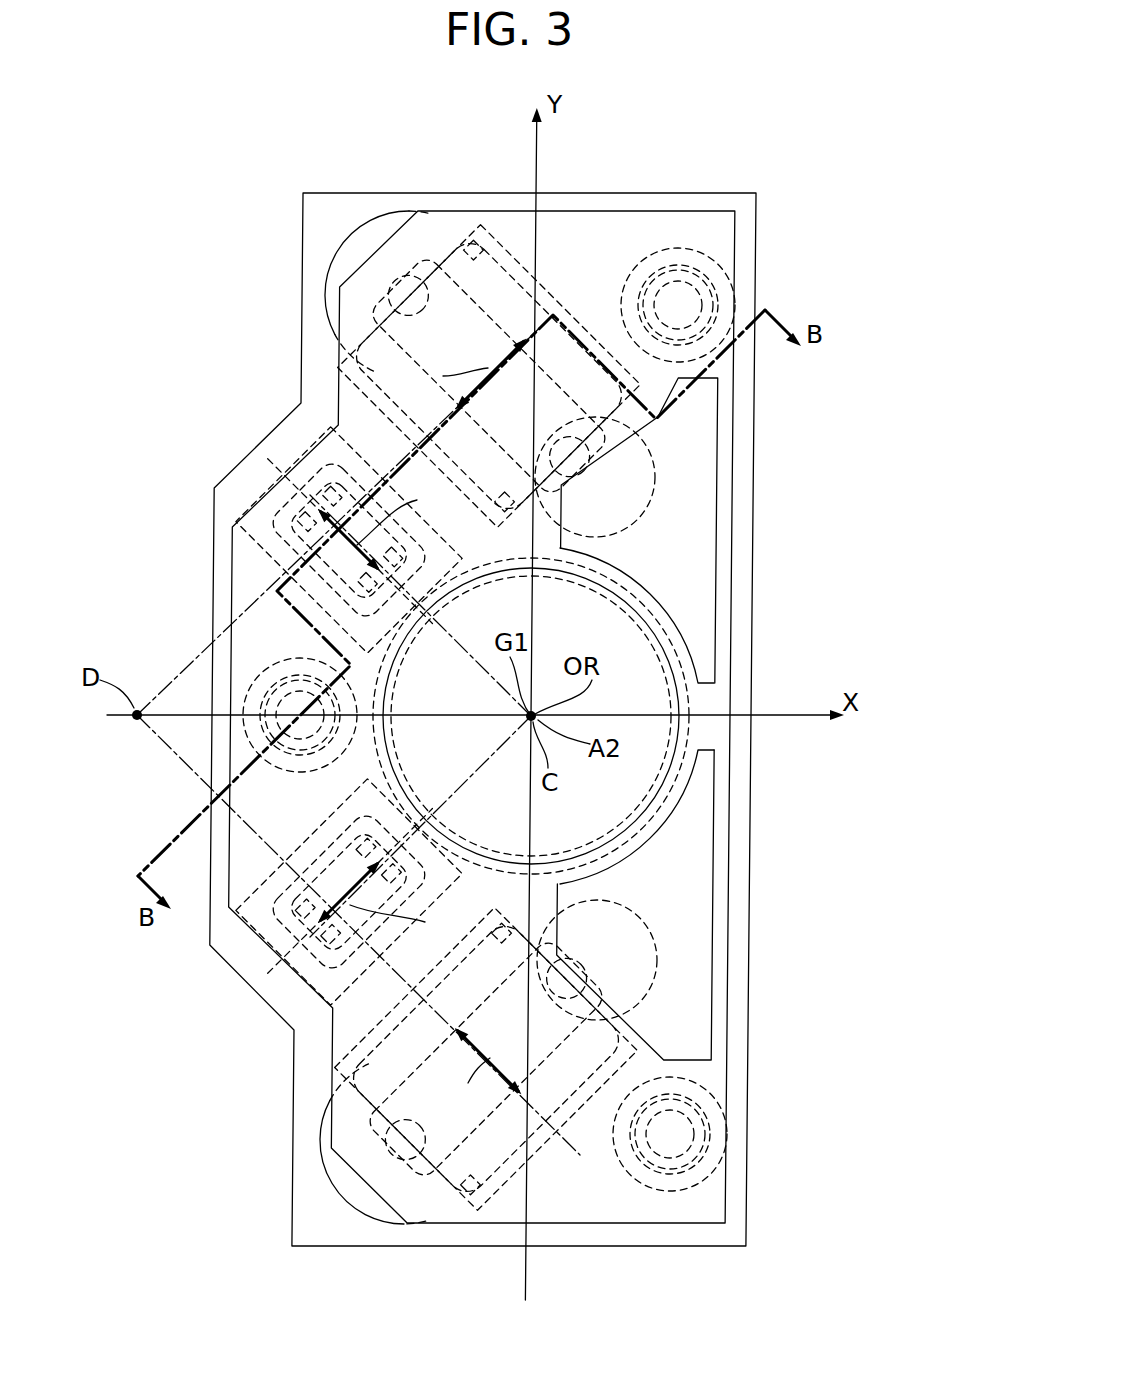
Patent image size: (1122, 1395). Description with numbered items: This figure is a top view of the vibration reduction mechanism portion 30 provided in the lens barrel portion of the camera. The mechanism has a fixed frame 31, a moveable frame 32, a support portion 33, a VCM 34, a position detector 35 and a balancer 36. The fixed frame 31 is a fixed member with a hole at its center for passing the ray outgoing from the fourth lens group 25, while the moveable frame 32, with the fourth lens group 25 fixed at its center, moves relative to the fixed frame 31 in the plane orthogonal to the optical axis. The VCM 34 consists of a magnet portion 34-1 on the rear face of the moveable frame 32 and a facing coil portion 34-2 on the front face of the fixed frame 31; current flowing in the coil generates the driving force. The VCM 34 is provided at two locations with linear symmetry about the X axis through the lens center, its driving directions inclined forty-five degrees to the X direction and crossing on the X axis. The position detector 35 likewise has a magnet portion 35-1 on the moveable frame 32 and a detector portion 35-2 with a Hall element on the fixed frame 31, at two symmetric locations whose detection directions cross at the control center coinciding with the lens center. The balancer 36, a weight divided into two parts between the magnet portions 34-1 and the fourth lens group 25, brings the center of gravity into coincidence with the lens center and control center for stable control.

The fourth lens group 25 is at (660, 738).
The vibration reduction mechanism portion 30 is at (408, 152).
The fixed frame 31 is at (300, 206).
The moveable frame 32 is at (345, 400).
The support portion 33 is at (703, 303).
The VCM 34 is at (172, 213).
The magnet portion 34-1 is at (410, 313).
The coil portion 34-2 is at (360, 256).
The position detector 35 is at (112, 533).
The magnet portion 35-1 is at (290, 538).
The detector portion 35-2 is at (300, 582).
The balancer 36 is at (695, 517).